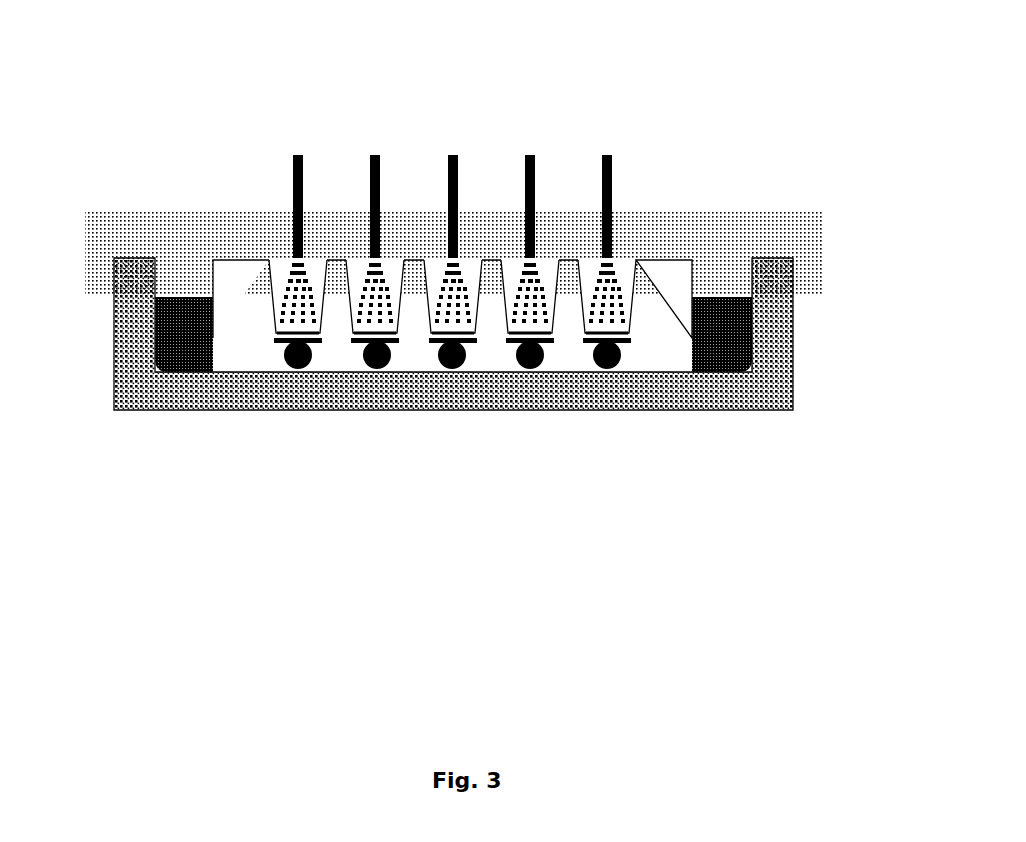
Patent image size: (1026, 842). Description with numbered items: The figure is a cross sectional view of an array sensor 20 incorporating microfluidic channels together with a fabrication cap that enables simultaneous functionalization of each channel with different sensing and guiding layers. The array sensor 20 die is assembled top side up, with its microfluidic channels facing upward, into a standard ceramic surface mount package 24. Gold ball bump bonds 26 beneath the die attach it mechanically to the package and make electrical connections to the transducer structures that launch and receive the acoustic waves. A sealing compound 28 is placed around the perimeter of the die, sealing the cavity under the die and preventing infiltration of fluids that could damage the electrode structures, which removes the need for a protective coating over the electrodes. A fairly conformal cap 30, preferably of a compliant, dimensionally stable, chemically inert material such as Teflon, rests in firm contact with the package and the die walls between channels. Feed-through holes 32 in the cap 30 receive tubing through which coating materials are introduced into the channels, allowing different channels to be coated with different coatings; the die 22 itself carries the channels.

The array sensor 20 is at (449, 264).
The microplate 22 is at (245, 320).
The ceramic surface mount package 24 is at (114, 323).
The gold ball bump bonds 26 is at (605, 368).
The sealing compound 28 is at (170, 350).
The cap 30 is at (760, 232).
The feed-through holes 32 is at (560, 132).